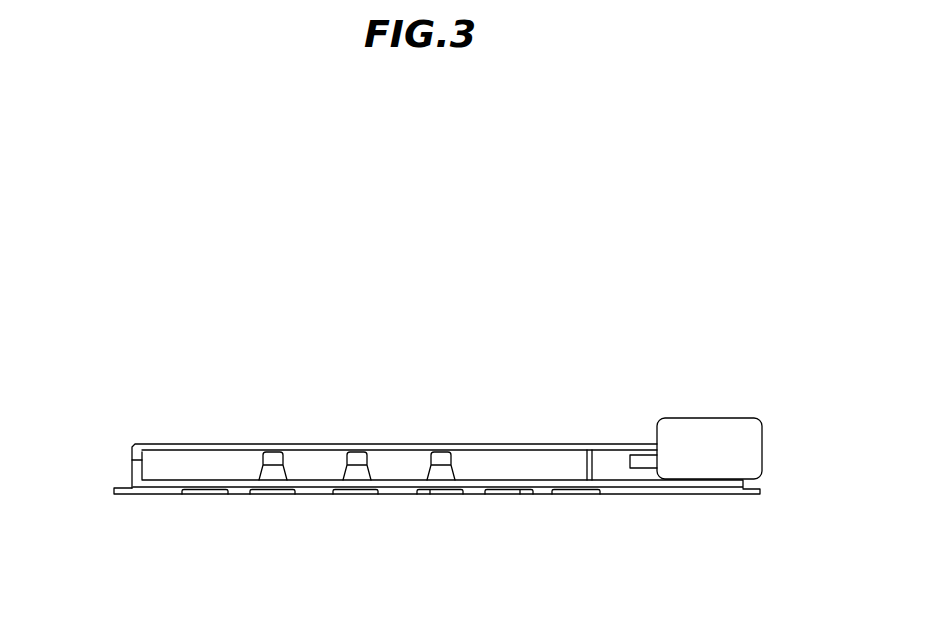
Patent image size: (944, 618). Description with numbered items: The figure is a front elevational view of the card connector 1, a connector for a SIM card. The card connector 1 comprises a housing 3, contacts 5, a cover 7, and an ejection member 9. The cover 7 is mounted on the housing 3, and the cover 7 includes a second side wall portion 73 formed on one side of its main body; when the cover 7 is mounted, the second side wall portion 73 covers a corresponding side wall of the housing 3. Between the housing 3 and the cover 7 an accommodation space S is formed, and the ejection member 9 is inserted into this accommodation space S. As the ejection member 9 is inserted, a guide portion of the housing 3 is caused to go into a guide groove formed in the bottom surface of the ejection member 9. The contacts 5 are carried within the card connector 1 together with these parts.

The card connector 1 is at (123, 411).
The housing 3 is at (397, 512).
The contacts 5 is at (275, 452).
The cover 7 is at (390, 434).
The second side wall portion 73 is at (132, 473).
The ejection member 9 is at (776, 441).
The accommodation space S is at (469, 472).